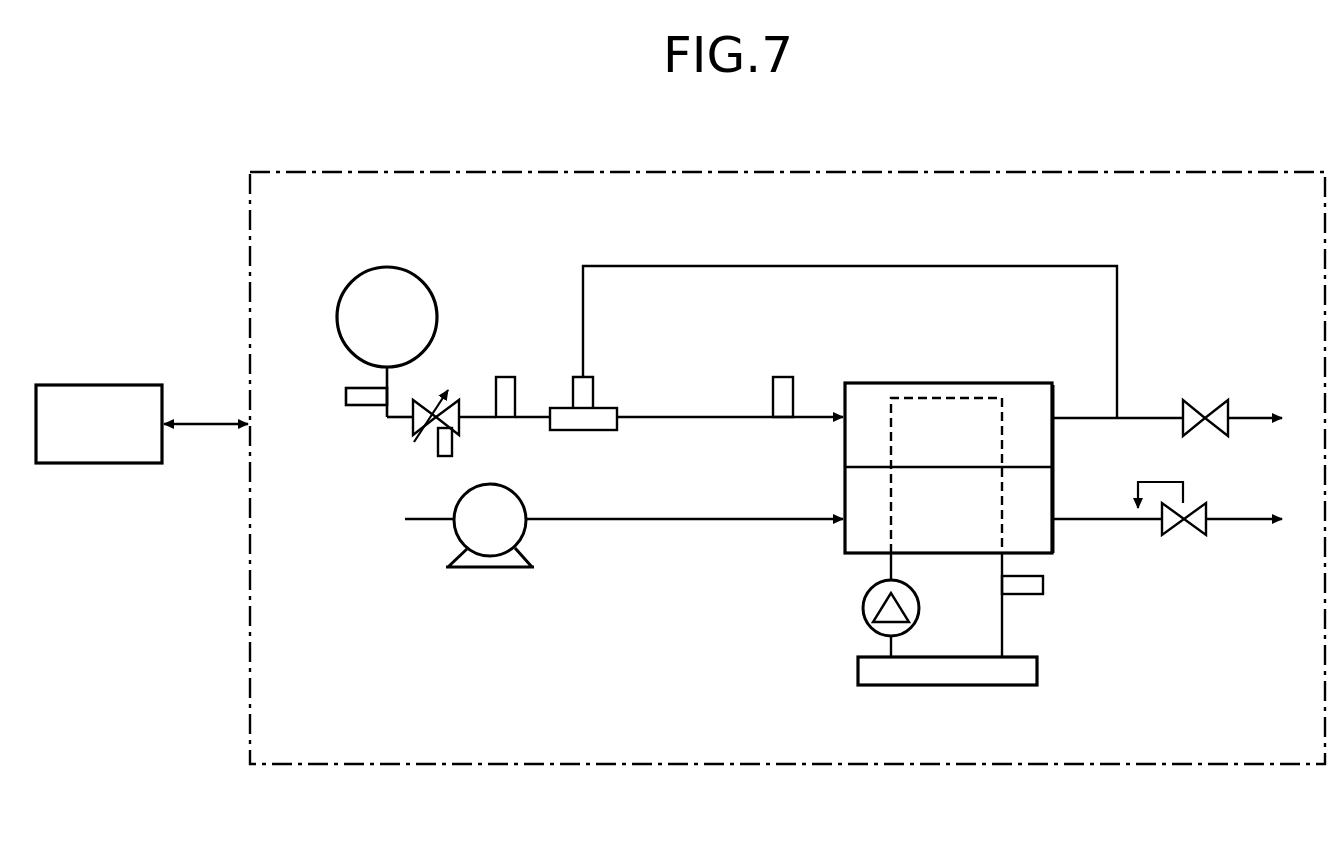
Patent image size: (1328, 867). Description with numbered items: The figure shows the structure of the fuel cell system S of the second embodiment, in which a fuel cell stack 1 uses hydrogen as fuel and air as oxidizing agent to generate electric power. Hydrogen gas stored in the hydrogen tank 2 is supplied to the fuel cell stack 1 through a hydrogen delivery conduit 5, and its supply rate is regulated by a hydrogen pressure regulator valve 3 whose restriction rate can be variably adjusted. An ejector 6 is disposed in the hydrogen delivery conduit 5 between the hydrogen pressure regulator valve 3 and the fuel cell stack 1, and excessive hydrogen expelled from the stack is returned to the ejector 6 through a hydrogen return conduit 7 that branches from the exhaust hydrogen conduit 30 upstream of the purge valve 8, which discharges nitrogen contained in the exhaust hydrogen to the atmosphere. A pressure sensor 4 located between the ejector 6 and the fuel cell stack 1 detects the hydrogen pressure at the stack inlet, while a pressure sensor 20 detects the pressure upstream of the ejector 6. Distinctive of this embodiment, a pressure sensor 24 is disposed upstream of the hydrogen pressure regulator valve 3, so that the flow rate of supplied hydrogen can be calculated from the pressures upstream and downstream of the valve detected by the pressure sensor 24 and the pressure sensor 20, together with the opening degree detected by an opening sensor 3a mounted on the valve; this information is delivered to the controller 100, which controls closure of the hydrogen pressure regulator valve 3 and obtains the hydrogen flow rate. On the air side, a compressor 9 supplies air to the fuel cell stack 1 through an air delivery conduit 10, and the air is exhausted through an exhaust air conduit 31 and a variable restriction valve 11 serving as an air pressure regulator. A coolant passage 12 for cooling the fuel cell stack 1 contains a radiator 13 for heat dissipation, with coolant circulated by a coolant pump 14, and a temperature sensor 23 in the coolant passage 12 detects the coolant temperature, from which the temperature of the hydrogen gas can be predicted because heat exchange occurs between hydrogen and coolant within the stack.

The fuel cell system S is at (908, 132).
The controller 100 is at (98, 385).
The fuel cell stack 1 is at (910, 383).
The hydrogen tank 2 is at (387, 266).
The hydrogen pressure regulator valve 3 is at (421, 432).
The opening sensor 3a is at (452, 443).
The pressure sensor 4 is at (782, 377).
The hydrogen delivery conduit 5 is at (683, 415).
The ejector 6 is at (598, 396).
The hydrogen return conduit 7 is at (944, 266).
The purge valve 8 is at (1225, 430).
The compressor 9 is at (525, 533).
The air delivery conduit 10 is at (645, 521).
The variable restriction valve 11 is at (1178, 536).
The coolant passage 12 is at (1003, 633).
The radiator 13 is at (973, 686).
The coolant pump 14 is at (863, 608).
The pressure sensor 20 is at (504, 377).
The temperature sensor 23 is at (1043, 588).
The pressure sensor 24 is at (346, 396).
The exhaust hydrogen conduit 30 is at (1157, 417).
The exhaust air conduit 31 is at (1085, 522).